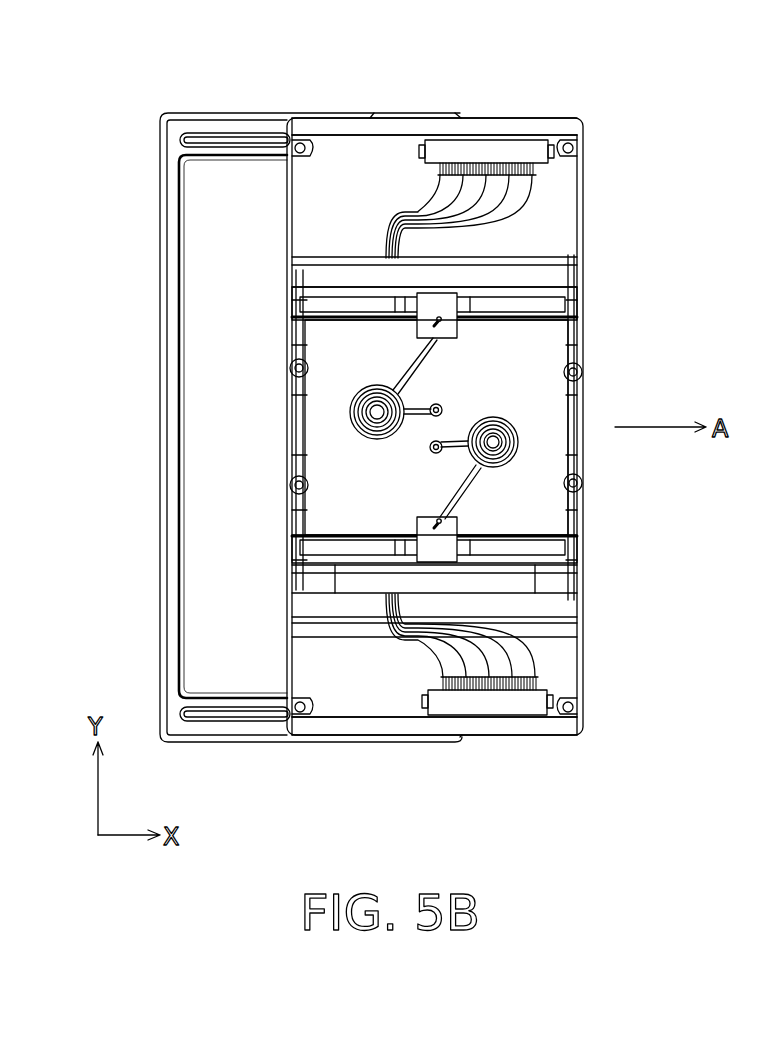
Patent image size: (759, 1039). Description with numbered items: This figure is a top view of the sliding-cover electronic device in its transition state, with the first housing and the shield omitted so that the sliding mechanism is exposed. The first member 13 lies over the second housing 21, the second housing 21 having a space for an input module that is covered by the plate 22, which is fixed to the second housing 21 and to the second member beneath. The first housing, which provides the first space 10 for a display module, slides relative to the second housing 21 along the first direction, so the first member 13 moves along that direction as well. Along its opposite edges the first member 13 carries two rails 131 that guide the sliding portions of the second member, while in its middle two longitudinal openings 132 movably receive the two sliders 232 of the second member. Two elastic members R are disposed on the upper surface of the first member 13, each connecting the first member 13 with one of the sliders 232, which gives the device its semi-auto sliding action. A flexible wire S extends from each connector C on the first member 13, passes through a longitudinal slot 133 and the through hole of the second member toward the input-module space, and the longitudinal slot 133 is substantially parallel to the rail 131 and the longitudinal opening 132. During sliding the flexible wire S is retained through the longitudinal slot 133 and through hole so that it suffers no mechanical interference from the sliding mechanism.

The first space 10 is at (576, 118).
The first member 13 is at (330, 457).
The second housing 21 is at (160, 214).
The plate 22 is at (202, 313).
The rail 131 is at (358, 118).
The longitudinal opening 132 is at (550, 308).
The longitudinal slot 133 is at (545, 260).
The slider 232 is at (458, 323).
The connector C is at (485, 140).
The flexible wire S is at (543, 258).
The elastic member R is at (393, 396).